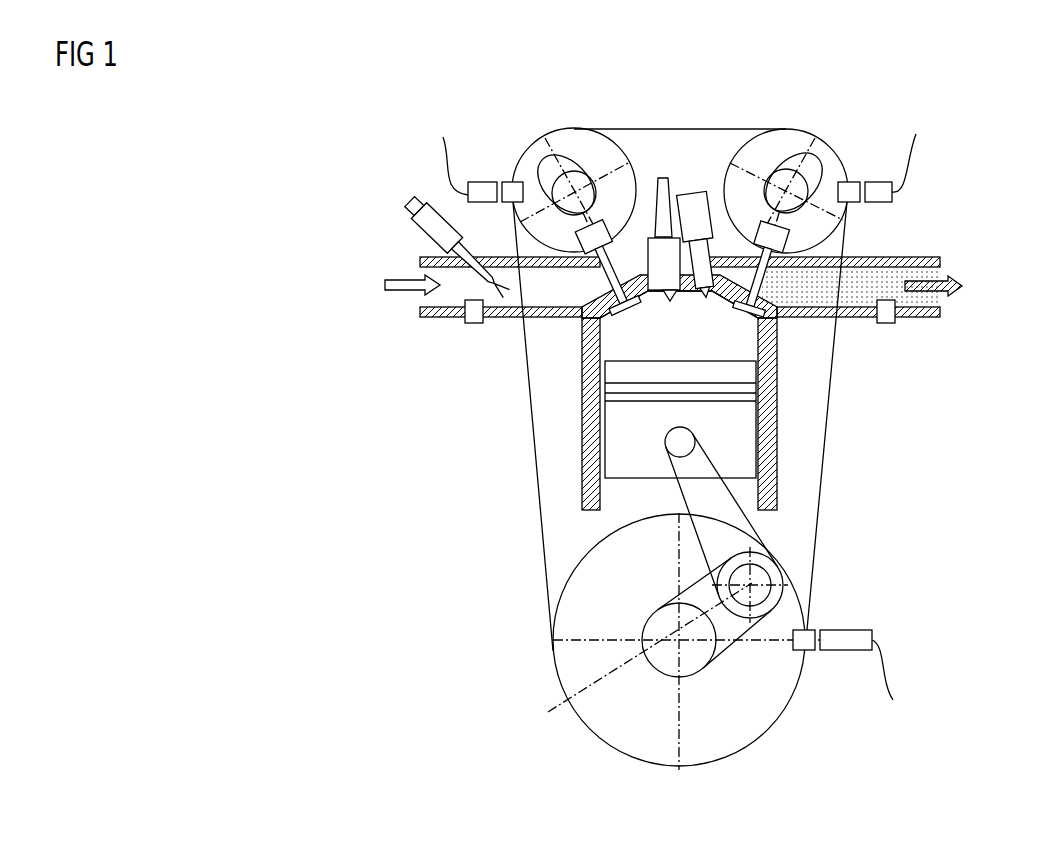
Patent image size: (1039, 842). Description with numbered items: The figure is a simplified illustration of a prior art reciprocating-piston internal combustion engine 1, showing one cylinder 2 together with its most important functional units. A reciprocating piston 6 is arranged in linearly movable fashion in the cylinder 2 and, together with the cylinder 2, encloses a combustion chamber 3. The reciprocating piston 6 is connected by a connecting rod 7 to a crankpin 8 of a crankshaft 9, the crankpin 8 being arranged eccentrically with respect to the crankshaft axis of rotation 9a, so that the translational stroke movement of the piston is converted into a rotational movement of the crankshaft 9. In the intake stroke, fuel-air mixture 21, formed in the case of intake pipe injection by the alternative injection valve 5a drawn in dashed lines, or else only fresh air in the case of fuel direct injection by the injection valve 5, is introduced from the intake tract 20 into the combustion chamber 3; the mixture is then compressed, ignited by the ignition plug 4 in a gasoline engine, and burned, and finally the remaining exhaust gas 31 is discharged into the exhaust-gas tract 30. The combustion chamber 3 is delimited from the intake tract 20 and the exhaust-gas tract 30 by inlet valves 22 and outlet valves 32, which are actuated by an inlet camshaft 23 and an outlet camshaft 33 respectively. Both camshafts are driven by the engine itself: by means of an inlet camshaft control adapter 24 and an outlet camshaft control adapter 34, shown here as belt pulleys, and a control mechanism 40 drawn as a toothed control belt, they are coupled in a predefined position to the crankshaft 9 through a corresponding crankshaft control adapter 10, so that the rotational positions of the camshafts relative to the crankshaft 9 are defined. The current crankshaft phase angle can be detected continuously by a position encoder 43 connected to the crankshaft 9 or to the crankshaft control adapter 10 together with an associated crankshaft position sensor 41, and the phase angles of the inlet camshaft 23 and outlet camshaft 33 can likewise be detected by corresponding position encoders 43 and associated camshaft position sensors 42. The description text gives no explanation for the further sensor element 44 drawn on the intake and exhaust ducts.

The internal combustion engine 1 is at (813, 103).
The cylinder 2 is at (590, 438).
The combustion chamber 3 is at (640, 365).
The ignition plug 4 is at (657, 205).
The injection valve 5 is at (701, 193).
The injection valve 5a is at (418, 213).
The reciprocating piston 6 is at (745, 432).
The connecting rod 7 is at (750, 530).
The crankpin 8 is at (783, 575).
The crankshaft 9 is at (705, 658).
The crankshaft axis of rotation 9a is at (639, 658).
The crankshaft control adapter 10 is at (632, 700).
The intake tract 20 is at (425, 258).
The fuel-air mixture 21 is at (412, 293).
The inlet valve 22 is at (600, 328).
The inlet camshaft 23 is at (556, 166).
The inlet camshaft control adapter 24 is at (572, 150).
The exhaust-gas tract 30 is at (880, 268).
The exhaust gas 31 is at (960, 290).
The outlet valve 32 is at (775, 330).
The outlet camshaft 33 is at (810, 170).
The outlet camshaft control adapter 34 is at (774, 150).
The control mechanism 40 is at (677, 129).
The crankshaft position sensor 41 is at (845, 650).
The camshaft position sensor 42 is at (468, 196).
The position encoder 43 is at (508, 182).
The pressure sensor 44 is at (470, 323).